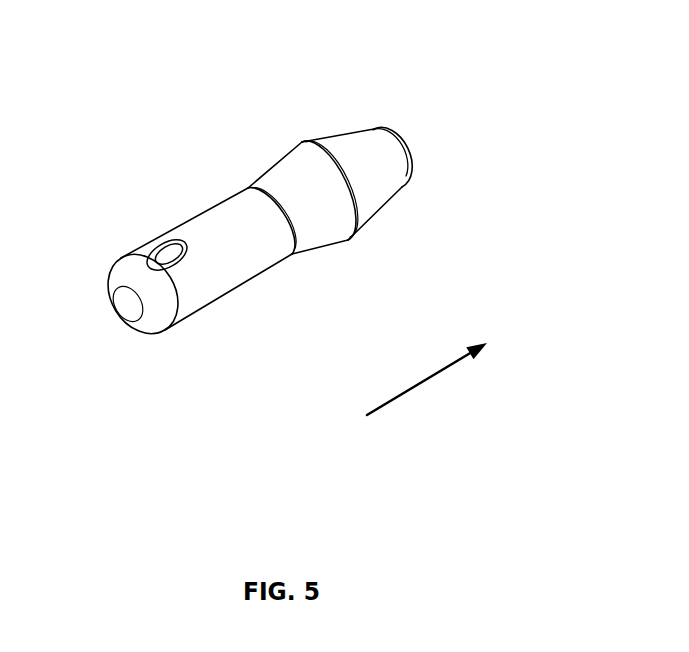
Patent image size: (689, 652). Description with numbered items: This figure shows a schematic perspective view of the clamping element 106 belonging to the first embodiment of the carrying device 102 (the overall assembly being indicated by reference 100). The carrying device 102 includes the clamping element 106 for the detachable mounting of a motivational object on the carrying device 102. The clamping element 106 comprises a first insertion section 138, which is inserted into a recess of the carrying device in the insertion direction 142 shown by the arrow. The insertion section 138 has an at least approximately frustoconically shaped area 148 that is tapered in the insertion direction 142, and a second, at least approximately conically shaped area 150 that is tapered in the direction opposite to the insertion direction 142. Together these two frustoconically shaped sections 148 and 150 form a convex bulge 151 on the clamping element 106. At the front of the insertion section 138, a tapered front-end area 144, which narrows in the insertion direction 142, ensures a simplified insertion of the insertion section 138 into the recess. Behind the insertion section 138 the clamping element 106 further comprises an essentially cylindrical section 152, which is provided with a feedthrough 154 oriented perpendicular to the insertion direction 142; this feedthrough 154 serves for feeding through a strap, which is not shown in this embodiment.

The medical device 100 is at (169, 109).
The carrying device 102 is at (244, 100).
The clamping element 106 is at (238, 233).
The insertion section 138 is at (354, 132).
The insertion direction 142 is at (415, 386).
The tapered front-end area 144 is at (409, 148).
The frustoconically shaped area 148 is at (378, 188).
The conically shaped area 150 is at (320, 222).
The convex bulge 151 is at (362, 238).
The cylindrical section 152 is at (215, 243).
The feedthrough 154 is at (167, 254).